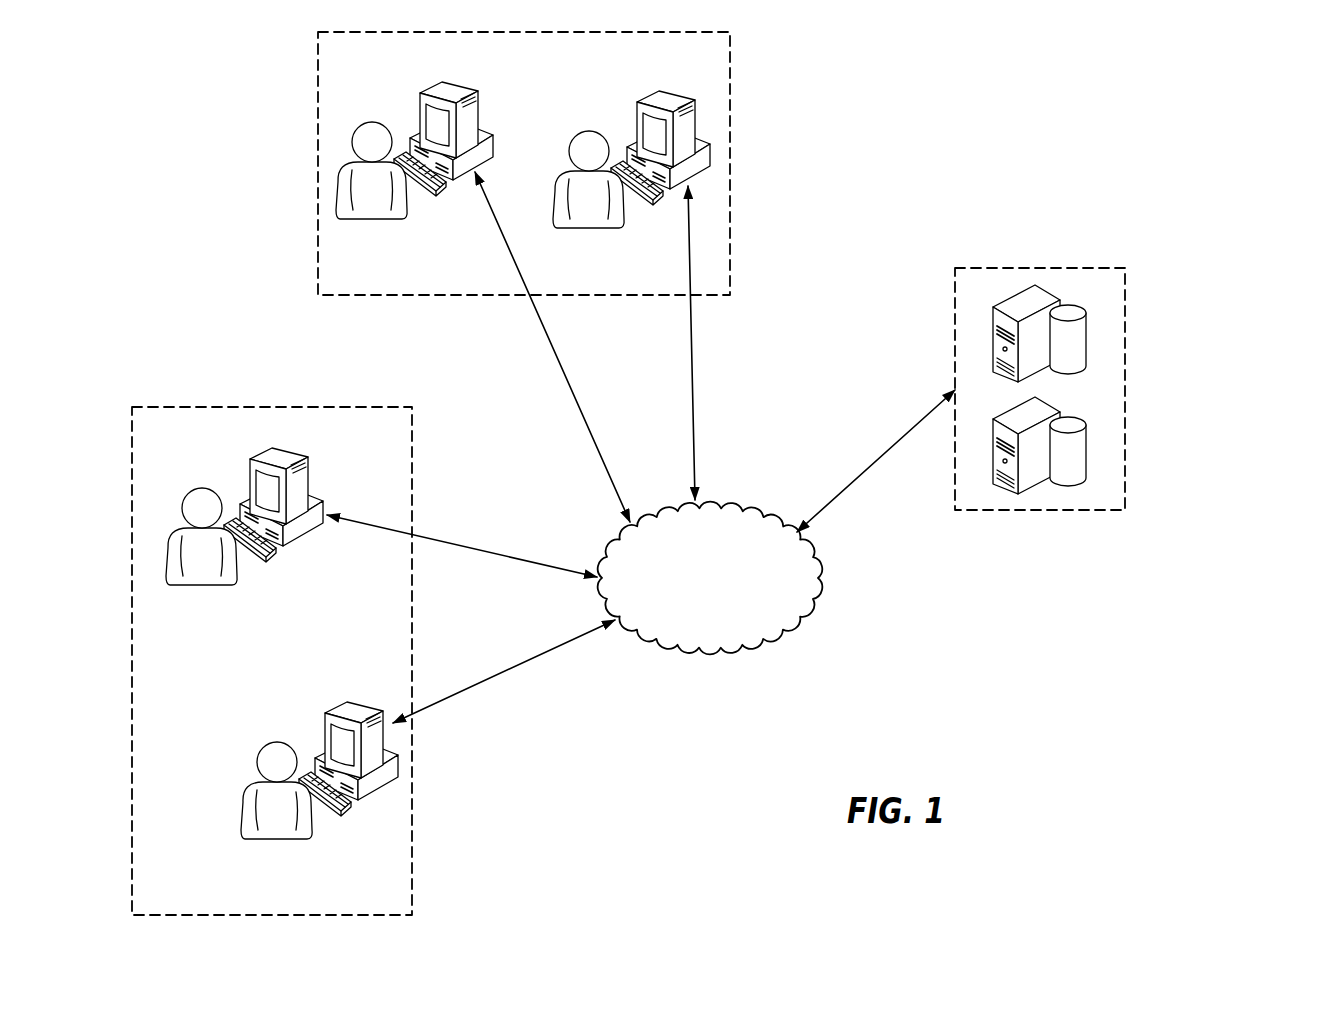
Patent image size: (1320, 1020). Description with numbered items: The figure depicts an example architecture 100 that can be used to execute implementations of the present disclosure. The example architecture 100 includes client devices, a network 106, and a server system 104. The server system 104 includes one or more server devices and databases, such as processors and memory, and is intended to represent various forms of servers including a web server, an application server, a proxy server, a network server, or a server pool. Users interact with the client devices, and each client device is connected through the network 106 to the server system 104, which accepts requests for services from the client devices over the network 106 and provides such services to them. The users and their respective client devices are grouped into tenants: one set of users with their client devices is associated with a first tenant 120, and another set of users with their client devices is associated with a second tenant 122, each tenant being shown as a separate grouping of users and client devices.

The example architecture 100 is at (700, 473).
The server system 104 is at (1125, 388).
The network 106 is at (758, 504).
The first tenant 120 is at (318, 172).
The second tenant 122 is at (178, 407).